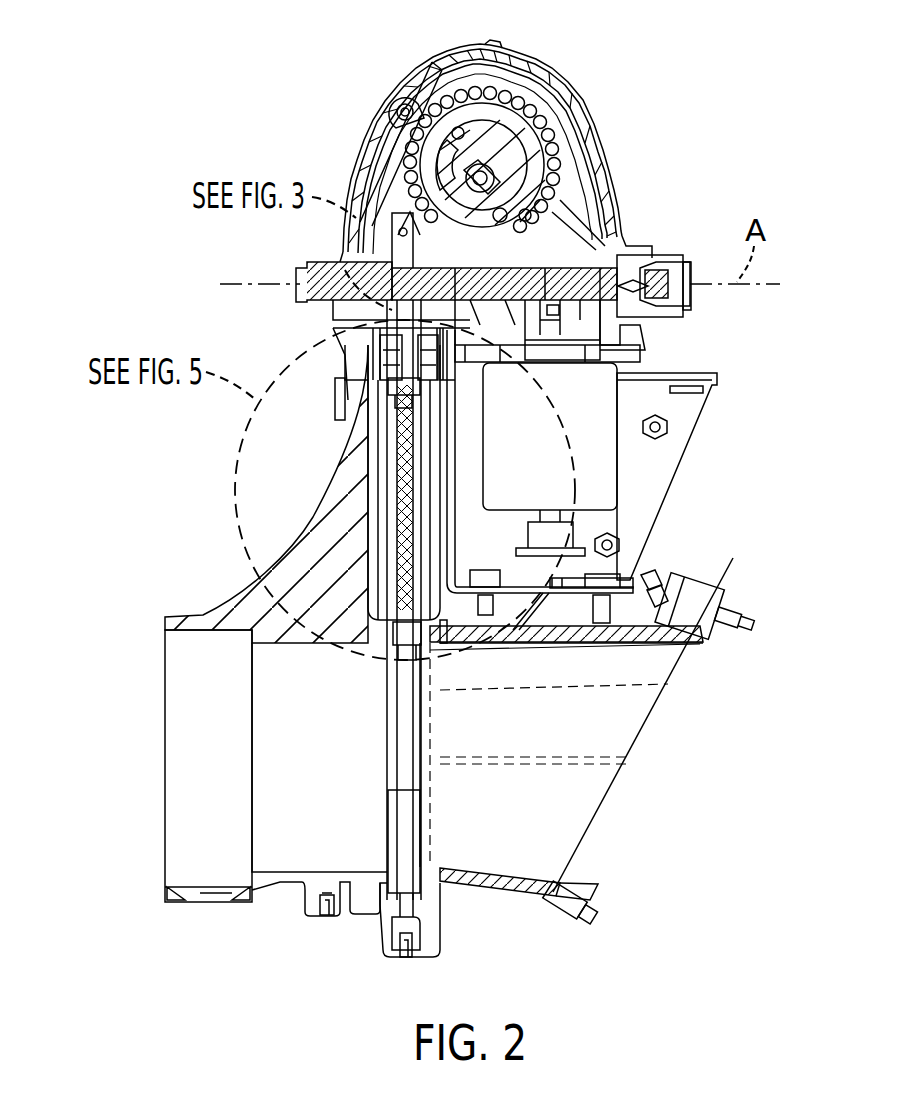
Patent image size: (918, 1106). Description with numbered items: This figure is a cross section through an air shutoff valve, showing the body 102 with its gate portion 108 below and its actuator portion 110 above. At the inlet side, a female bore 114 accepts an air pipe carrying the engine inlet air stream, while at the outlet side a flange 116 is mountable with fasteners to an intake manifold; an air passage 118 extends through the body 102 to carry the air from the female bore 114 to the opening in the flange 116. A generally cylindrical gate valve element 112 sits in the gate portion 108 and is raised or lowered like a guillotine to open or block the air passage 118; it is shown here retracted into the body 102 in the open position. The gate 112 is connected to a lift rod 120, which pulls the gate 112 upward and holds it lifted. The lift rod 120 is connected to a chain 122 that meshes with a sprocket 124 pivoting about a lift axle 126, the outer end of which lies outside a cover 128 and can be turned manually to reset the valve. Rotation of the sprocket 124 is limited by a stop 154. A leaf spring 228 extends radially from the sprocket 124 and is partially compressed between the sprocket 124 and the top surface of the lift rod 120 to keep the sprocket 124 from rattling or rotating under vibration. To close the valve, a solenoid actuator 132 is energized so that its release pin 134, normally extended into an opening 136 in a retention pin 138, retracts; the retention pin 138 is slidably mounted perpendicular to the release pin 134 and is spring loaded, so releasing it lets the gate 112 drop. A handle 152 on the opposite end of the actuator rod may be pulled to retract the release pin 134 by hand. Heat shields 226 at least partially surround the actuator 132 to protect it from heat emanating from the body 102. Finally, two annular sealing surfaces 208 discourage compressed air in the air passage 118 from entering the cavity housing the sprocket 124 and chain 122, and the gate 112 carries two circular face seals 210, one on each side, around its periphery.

The body 102 is at (326, 539).
The gate portion 108 is at (364, 889).
The actuator portion 110 is at (570, 76).
The gate valve element 112 is at (405, 489).
The female bore 114 is at (176, 766).
The flange 116 is at (713, 601).
The air passage 118 is at (568, 802).
The lift rod 120 is at (388, 273).
The chain 122 is at (567, 136).
The sprocket 124 is at (562, 176).
The lift axle 126 is at (474, 178).
The cover 128 is at (382, 110).
The actuator 132 is at (611, 459).
The release pin 134 is at (548, 292).
The opening 136 is at (561, 294).
The retention pin 138 is at (609, 291).
The handle 152 is at (563, 539).
The stop 154 is at (405, 104).
The annular sealing surfaces 208 is at (414, 367).
The face seals 210 is at (392, 387).
The heat shields 226 is at (686, 406).
The leaf spring 228 is at (393, 208).